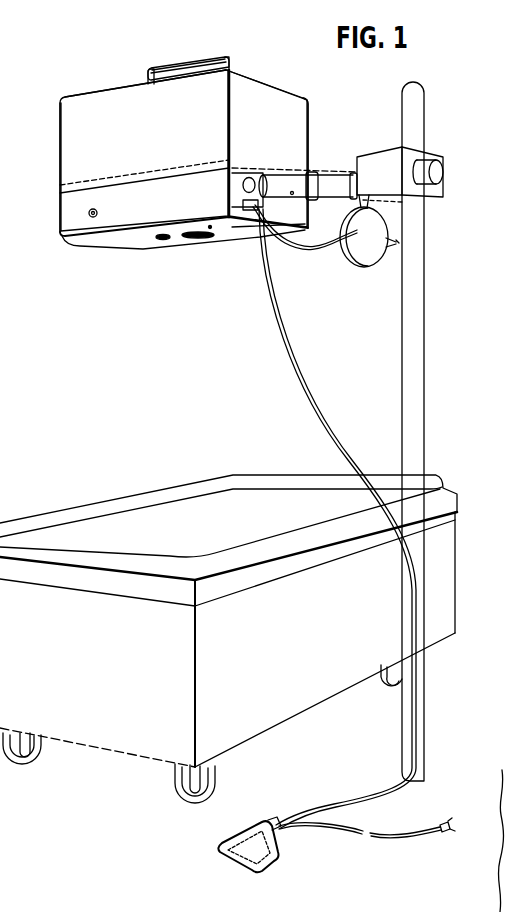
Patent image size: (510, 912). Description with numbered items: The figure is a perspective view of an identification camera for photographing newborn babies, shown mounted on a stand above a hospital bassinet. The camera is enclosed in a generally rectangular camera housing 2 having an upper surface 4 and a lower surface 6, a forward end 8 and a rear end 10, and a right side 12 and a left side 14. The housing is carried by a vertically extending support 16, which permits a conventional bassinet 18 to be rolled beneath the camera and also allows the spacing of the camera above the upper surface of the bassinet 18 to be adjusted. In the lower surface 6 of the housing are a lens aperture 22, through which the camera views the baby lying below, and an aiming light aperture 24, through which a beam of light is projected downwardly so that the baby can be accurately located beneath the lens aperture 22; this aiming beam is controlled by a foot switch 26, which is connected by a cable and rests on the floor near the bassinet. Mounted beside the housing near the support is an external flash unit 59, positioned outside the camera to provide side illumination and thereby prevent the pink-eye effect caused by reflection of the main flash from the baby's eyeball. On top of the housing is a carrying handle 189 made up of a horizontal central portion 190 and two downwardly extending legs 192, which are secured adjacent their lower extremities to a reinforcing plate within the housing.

The camera housing 2 is at (280, 80).
The upper surface 4 is at (88, 93).
The lower surface 6 is at (118, 239).
The forward end 8 is at (58, 152).
The rear end 10 is at (292, 140).
The right side 12 is at (87, 117).
The left side 14 is at (310, 101).
The support 16 is at (426, 362).
The bassinet 18 is at (129, 719).
The lens aperture 22 is at (197, 240).
The aiming light aperture 24 is at (163, 240).
The foot switch 26 is at (254, 850).
The external flash unit 59 is at (360, 250).
The carrying handle 189 is at (202, 55).
The horizontal central portion 190 is at (177, 63).
The legs 192 is at (148, 80).